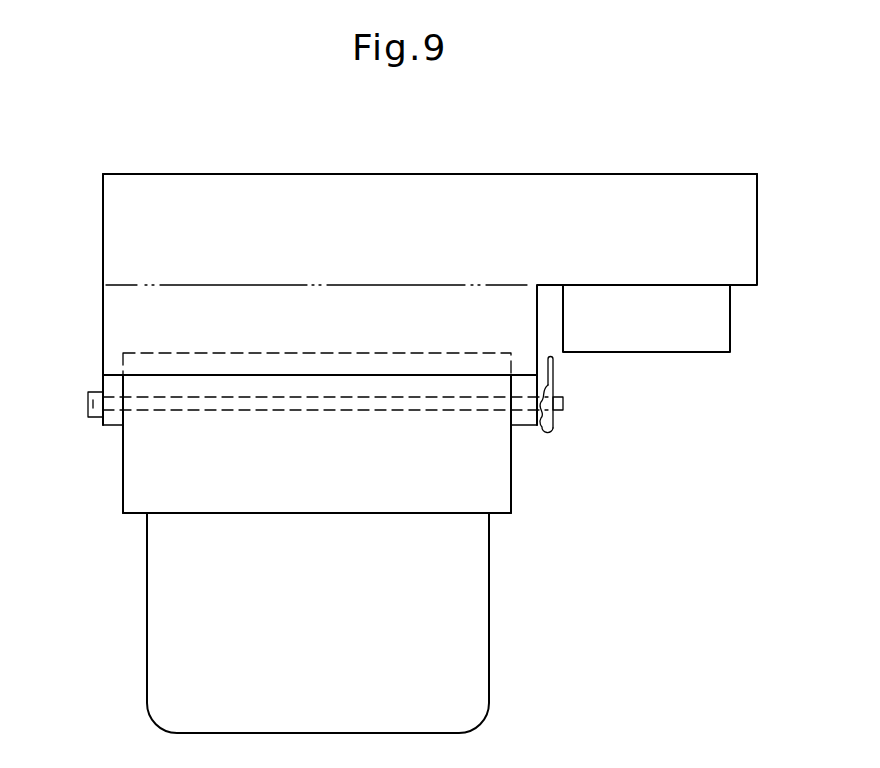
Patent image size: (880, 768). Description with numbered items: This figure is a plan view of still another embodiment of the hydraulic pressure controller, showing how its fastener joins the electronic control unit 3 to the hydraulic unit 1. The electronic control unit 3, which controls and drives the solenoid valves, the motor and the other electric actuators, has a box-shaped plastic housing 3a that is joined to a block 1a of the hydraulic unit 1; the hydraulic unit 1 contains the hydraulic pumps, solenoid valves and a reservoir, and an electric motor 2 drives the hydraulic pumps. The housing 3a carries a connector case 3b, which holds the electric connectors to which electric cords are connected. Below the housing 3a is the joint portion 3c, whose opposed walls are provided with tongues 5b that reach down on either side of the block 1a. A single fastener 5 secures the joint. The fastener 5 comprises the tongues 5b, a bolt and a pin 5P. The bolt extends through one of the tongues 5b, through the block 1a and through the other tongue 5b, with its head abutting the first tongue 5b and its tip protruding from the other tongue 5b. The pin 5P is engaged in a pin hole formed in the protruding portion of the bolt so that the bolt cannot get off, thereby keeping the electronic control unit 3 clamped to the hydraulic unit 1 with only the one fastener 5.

The hydraulic unit 1 is at (511, 517).
The block 1a is at (137, 497).
The electric motor 2 is at (496, 661).
The electronic control unit 3 is at (551, 173).
The housing 3a is at (213, 189).
The connector case 3b is at (710, 335).
The joint portion 3c is at (358, 302).
The fastener 5 is at (540, 437).
The tongues 5b is at (112, 421).
The pin 5P is at (553, 423).